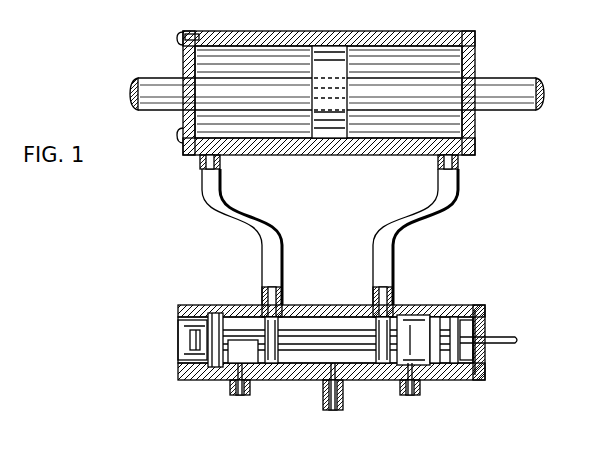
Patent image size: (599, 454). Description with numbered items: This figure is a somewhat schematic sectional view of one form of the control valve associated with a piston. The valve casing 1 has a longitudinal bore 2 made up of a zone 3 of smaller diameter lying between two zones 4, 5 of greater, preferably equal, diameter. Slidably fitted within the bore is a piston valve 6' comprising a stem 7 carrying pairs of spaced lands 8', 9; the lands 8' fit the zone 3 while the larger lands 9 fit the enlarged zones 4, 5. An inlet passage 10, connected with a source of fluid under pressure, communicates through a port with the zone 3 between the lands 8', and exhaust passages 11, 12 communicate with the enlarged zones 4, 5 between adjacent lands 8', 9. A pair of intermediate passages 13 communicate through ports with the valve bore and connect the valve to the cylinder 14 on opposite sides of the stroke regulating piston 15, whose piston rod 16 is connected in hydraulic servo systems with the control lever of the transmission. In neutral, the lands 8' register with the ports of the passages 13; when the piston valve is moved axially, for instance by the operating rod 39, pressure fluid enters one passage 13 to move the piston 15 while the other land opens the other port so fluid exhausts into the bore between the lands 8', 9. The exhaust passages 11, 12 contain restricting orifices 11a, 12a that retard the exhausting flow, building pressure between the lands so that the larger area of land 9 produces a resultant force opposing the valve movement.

The valve casing 1 is at (423, 306).
The longitudinal bore 2 is at (470, 324).
The zone of smaller diameter 3 is at (353, 305).
The zone of greater diameter 4 is at (185, 305).
The zone of greater diameter 5 is at (483, 306).
The piston valve 6' is at (270, 368).
The stem 7 is at (333, 346).
The lands 8' is at (327, 356).
The lands 9 is at (205, 358).
The inlet passage 10 is at (337, 408).
The exhaust passage 11 is at (235, 388).
The restricting orifice 11a is at (240, 396).
The exhaust passage 12 is at (419, 388).
The restricting orifice 12a is at (410, 396).
The intermediate passages 13 is at (263, 297).
The cylinder 14 is at (183, 121).
The stroke regulating piston 15 is at (333, 52).
The piston rod 16 is at (497, 102).
The operating rod 39 is at (514, 344).